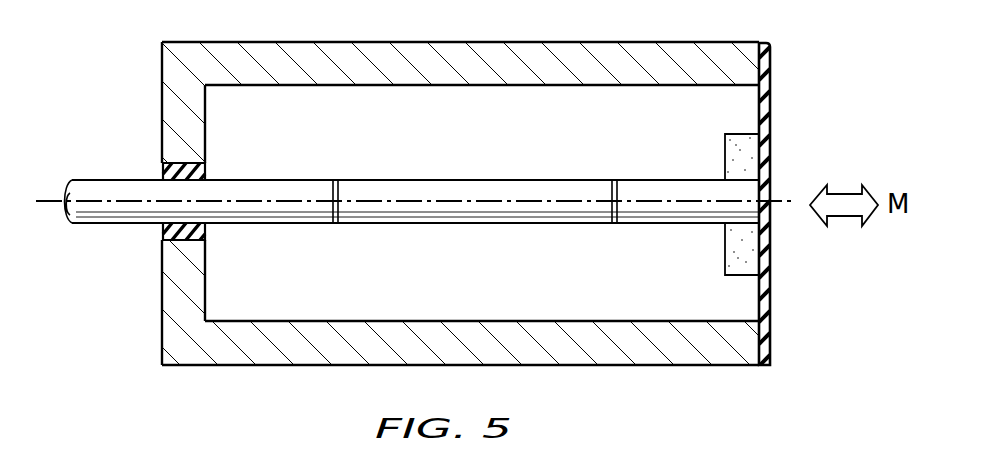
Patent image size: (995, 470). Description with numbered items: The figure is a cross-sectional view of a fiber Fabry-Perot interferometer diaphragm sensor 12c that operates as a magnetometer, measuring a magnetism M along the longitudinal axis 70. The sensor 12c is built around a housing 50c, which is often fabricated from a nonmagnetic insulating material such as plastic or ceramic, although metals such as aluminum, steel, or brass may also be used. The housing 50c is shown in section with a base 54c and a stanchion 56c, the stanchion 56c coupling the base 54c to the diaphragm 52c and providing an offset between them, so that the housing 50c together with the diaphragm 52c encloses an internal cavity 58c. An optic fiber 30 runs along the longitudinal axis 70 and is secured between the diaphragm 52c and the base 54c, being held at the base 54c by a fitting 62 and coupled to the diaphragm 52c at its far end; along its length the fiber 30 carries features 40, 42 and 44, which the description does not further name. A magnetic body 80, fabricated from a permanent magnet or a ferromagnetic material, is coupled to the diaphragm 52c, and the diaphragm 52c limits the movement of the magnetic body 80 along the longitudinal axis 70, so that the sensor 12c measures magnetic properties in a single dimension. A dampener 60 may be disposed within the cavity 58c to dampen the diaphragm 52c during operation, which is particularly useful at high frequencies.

The fiber Fabry-Perot interferometer diaphragm sensor 12c is at (446, 209).
The optic fiber 30 is at (412, 210).
The chamber 40 is at (454, 146).
The first ring 42 is at (333, 183).
The second ring 44 is at (613, 192).
The housing 50c is at (343, 42).
The diaphragm 52c is at (770, 320).
The side wall 54c is at (162, 330).
The bottom wall 56c is at (315, 357).
The inner surface of bottom wall 58c is at (497, 320).
The dampener 60 is at (729, 297).
The fitting 62 is at (163, 170).
The longitudinal axis 70 is at (47, 203).
The magnetic body 80 is at (725, 150).